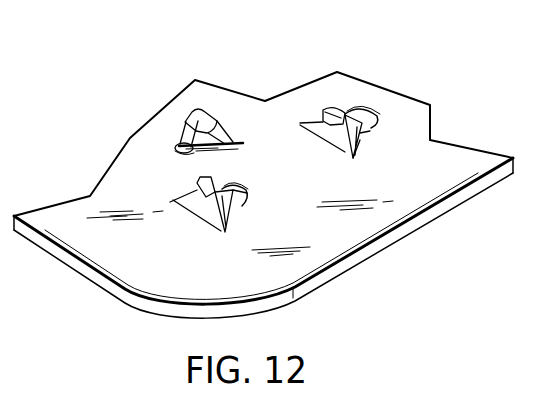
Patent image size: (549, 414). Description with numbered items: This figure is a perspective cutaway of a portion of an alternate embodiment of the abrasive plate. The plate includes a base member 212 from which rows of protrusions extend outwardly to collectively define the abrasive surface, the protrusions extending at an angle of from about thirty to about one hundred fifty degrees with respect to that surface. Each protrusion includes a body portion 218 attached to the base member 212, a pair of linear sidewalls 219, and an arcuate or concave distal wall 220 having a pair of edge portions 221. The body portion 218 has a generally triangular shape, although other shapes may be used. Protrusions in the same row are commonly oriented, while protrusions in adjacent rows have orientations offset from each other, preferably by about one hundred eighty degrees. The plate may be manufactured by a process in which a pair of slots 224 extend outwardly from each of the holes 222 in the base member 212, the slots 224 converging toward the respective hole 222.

The base member 212 is at (353, 267).
The body portion 218 is at (337, 113).
The linear sidewalls 219 is at (237, 198).
The arcuate or concave distal wall 220 is at (208, 117).
The edge portions 221 is at (200, 112).
The holes 222 is at (176, 147).
The slots 224 is at (360, 140).